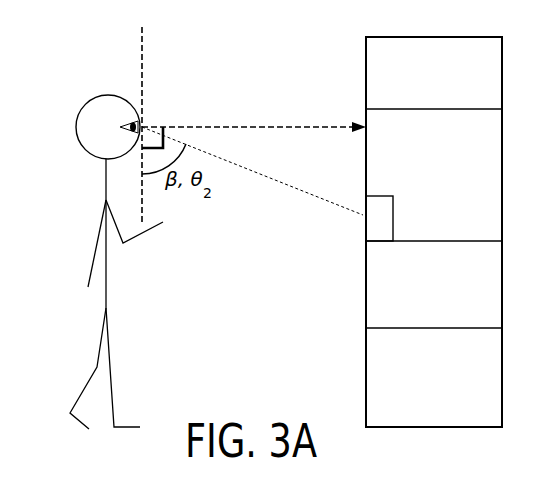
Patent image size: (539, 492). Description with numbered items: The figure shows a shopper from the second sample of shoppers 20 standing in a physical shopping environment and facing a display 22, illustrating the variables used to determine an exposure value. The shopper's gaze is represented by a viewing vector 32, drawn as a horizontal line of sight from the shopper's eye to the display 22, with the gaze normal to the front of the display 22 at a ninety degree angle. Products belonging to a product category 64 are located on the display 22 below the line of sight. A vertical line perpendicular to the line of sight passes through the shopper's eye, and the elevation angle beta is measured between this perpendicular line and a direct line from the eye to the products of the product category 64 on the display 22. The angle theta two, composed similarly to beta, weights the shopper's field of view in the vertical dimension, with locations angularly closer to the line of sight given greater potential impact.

The second sample of shoppers 20 is at (109, 112).
The viewing vector 32 is at (288, 123).
The display 22 is at (438, 183).
The product category 64 is at (393, 222).